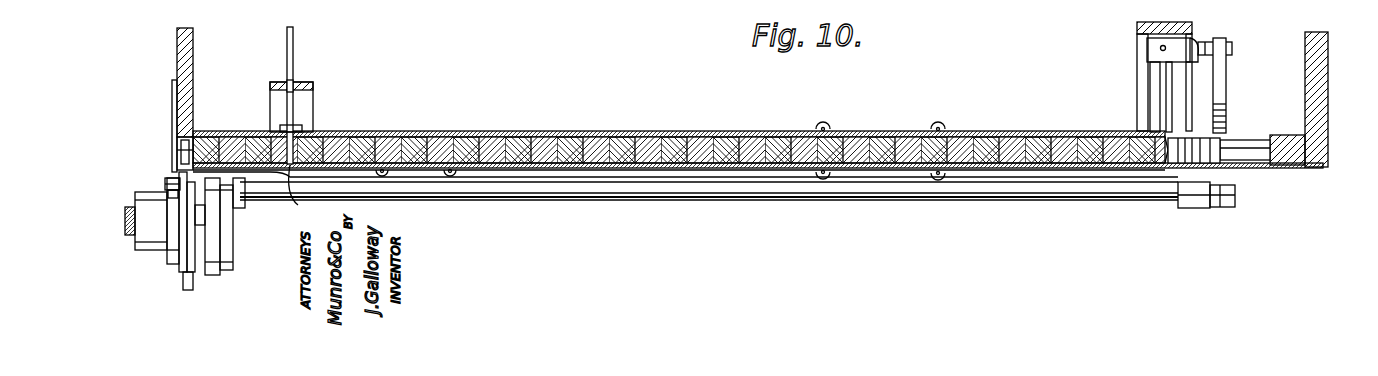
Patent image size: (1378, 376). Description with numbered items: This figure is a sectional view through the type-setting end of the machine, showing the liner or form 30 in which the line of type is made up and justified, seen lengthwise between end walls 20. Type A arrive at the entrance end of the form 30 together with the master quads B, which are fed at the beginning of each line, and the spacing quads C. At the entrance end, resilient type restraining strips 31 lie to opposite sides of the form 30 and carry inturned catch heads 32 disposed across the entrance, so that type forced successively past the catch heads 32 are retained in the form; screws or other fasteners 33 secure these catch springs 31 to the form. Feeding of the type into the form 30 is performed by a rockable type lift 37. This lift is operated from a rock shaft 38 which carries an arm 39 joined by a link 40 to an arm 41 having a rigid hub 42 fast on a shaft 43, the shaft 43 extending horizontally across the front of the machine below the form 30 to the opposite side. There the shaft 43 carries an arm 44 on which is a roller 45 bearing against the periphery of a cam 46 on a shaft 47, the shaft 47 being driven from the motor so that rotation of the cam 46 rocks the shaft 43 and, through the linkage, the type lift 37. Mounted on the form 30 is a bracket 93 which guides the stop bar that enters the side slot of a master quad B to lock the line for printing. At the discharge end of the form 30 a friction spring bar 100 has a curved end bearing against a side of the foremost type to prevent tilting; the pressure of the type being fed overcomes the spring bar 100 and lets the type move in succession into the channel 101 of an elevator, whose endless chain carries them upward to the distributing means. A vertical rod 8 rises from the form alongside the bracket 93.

The side wall 20 is at (193, 50).
The liner or form 30 is at (632, 132).
The channel 101 is at (190, 142).
The friction spring bar 100 is at (175, 176).
The vertical rod 8 is at (293, 50).
The bracket 93 is at (313, 103).
The screws or fasteners 33 is at (937, 124).
The type A is at (848, 140).
The spacing quads C is at (920, 140).
The resilient type restraining strips 31 is at (1010, 131).
The shaft 43 is at (876, 198).
The shaft 47 is at (132, 218).
The cam 46 is at (228, 213).
The master quad B is at (298, 192).
The arm 44 is at (240, 231).
The roller 45 is at (216, 274).
The rock shaft 38 is at (1148, 94).
The arm 39 is at (1190, 45).
The link 40 is at (1232, 50).
The arm 41 is at (1225, 88).
The rockable type lift 37 is at (1248, 150).
The catch heads 32 is at (1170, 170).
The rigid hub 42 is at (1215, 206).